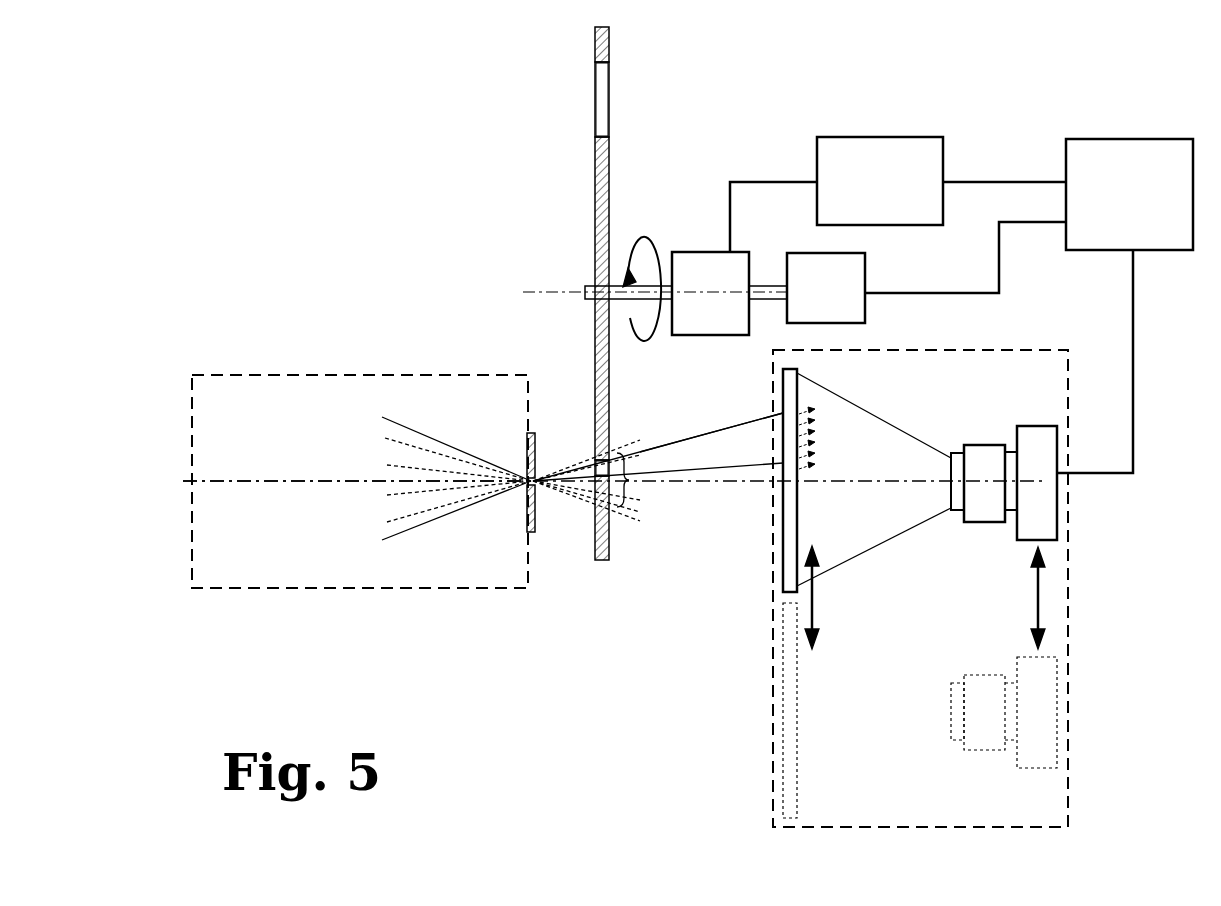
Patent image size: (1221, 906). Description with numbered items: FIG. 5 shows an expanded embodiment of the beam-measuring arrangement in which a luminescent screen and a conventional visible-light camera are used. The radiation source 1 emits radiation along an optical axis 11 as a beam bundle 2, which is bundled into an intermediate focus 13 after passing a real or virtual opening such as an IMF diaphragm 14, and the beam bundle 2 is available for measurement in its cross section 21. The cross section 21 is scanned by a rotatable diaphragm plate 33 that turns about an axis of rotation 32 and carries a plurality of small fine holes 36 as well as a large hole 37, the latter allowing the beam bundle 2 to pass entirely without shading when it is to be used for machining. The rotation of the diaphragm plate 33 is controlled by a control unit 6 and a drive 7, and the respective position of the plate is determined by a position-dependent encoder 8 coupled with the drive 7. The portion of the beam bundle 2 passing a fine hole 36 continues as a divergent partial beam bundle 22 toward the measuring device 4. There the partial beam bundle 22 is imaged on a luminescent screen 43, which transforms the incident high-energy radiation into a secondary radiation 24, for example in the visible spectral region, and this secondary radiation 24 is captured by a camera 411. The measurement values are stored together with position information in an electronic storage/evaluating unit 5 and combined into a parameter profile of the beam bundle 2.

The radiation source 1 is at (363, 375).
The optical axis 11 is at (322, 483).
The intermediate focus 13 is at (528, 440).
The IMF diaphragm 14 is at (530, 505).
The beam bundle 2 is at (572, 505).
The cross section 21 is at (624, 470).
The partial beam bundle 22 is at (707, 467).
The axis of rotation 32 is at (538, 292).
The diaphragm plate 33 is at (594, 185).
The fine hole 36 is at (595, 462).
The large hole 37 is at (594, 82).
The drive 7 is at (690, 258).
The control unit 6 is at (906, 155).
The storage/evaluating unit 5 is at (1141, 155).
The position-dependent encoder 8 is at (860, 306).
The measuring device 4 is at (1062, 535).
The luminescent screen 43 is at (790, 497).
The secondary radiation 24 is at (805, 432).
The camera 411 is at (1023, 520).